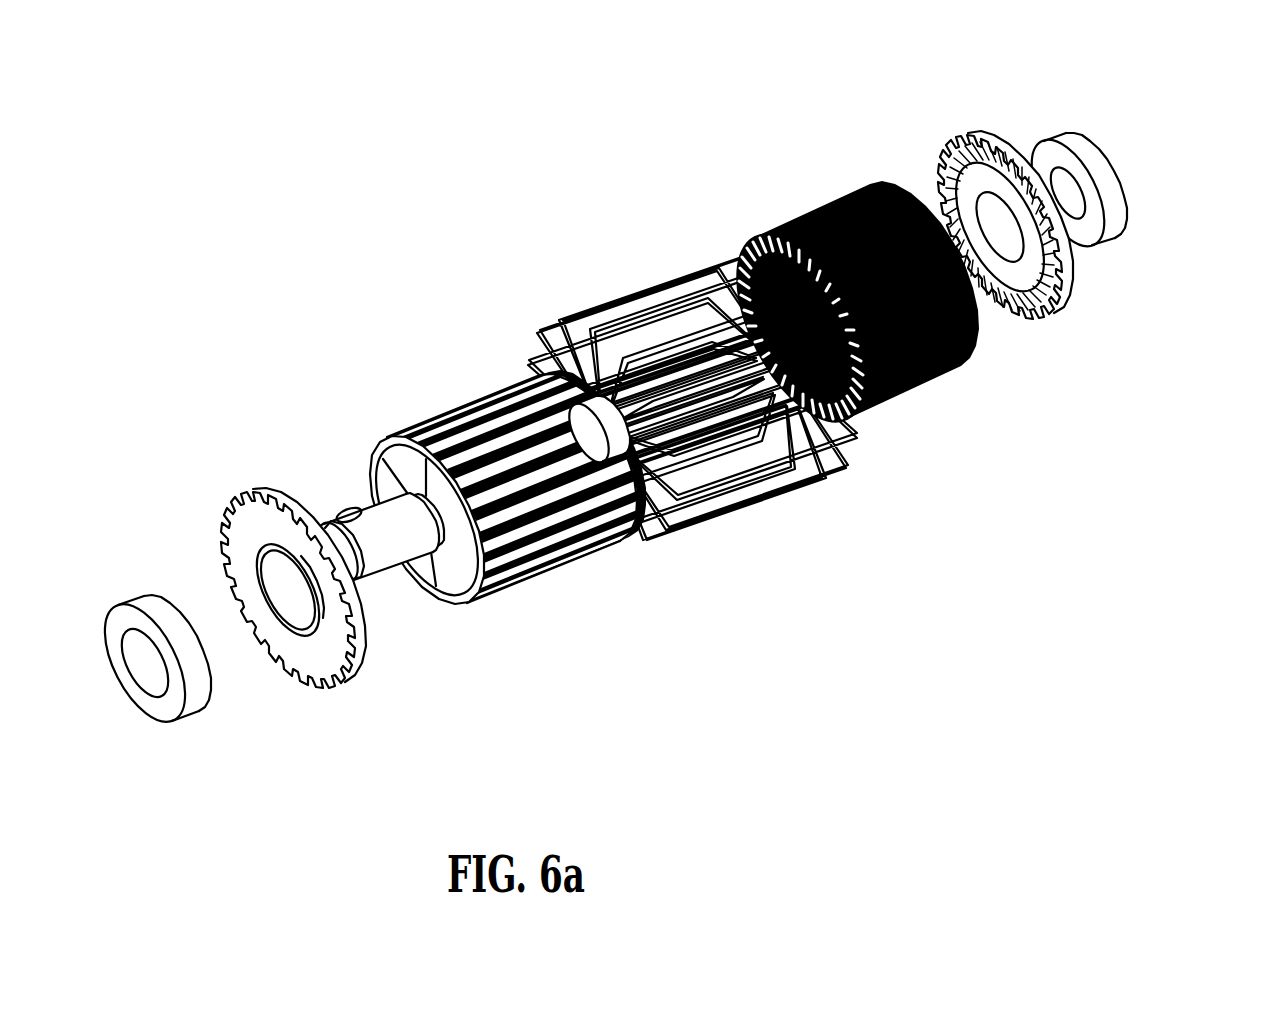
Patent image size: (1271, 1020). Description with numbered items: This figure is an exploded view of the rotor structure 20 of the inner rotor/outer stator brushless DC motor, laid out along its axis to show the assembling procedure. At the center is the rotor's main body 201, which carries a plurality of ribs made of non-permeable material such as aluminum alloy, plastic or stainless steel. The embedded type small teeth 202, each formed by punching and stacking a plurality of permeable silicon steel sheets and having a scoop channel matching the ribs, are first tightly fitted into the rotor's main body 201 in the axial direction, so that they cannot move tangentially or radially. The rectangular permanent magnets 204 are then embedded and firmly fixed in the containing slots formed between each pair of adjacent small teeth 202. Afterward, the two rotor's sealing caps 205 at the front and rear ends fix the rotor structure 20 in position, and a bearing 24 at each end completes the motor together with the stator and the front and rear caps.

The rotor structure 20 is at (1143, 91).
The bearing 24 is at (1130, 228).
The rotor's main body 201 is at (518, 577).
The embedded type small teeth 202 is at (906, 396).
The permanent magnets 204 is at (713, 495).
The rotor's sealing caps 205 is at (1053, 321).